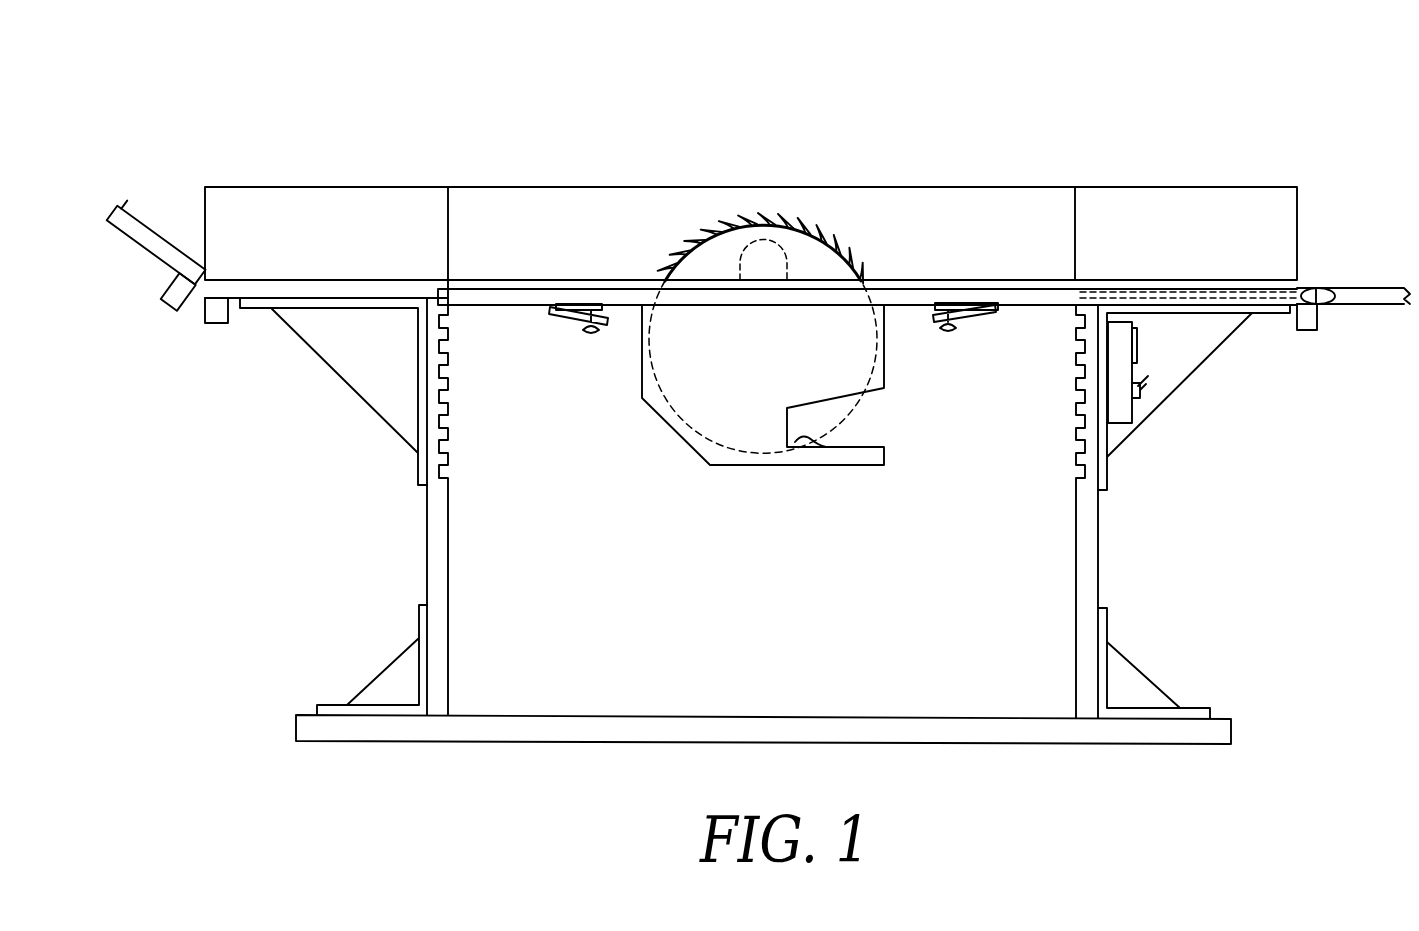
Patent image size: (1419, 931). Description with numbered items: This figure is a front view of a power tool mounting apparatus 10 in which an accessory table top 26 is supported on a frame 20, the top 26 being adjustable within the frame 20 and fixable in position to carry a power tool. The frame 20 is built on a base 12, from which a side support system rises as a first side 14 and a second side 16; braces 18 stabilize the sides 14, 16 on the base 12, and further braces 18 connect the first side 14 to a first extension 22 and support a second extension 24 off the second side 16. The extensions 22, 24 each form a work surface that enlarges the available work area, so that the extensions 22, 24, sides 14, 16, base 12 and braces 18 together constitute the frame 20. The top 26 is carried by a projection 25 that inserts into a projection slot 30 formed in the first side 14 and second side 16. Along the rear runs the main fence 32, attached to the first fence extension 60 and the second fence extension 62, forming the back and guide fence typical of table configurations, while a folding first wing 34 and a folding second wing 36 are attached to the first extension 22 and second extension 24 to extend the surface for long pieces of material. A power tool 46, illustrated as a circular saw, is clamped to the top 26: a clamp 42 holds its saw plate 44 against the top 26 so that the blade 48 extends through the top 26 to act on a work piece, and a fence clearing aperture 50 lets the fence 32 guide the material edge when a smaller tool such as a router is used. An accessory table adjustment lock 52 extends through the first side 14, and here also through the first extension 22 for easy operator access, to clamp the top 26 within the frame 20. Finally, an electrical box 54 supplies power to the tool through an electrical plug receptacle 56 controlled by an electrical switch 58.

The power tool mounting apparatus 10 is at (945, 92).
The base 12 is at (1232, 730).
The first side 14 is at (1098, 558).
The second side 16 is at (427, 565).
The braces 18 is at (353, 397).
The frame 20 is at (1100, 512).
The first extension 22 is at (1292, 312).
The second extension 24 is at (234, 304).
The projection 25 is at (1082, 294).
The accessory table top 26 is at (968, 288).
The projection slot 30 is at (439, 422).
The main fence 32 is at (862, 187).
The folding first wing 34 is at (1372, 304).
The folding second wing 36 is at (137, 217).
The clamp 42 is at (573, 300).
The saw plate 44 is at (620, 307).
The power tool 46 is at (692, 330).
The blade 48 is at (787, 248).
The fence clearing aperture 50 is at (806, 226).
The accessory table adjustment lock 52 is at (1322, 290).
The electrical box 54 is at (1133, 323).
The electrical plug receptacle 56 is at (1137, 346).
The electrical switch 58 is at (1137, 397).
The first fence extension 60 is at (1220, 187).
The second fence extension 62 is at (348, 186).